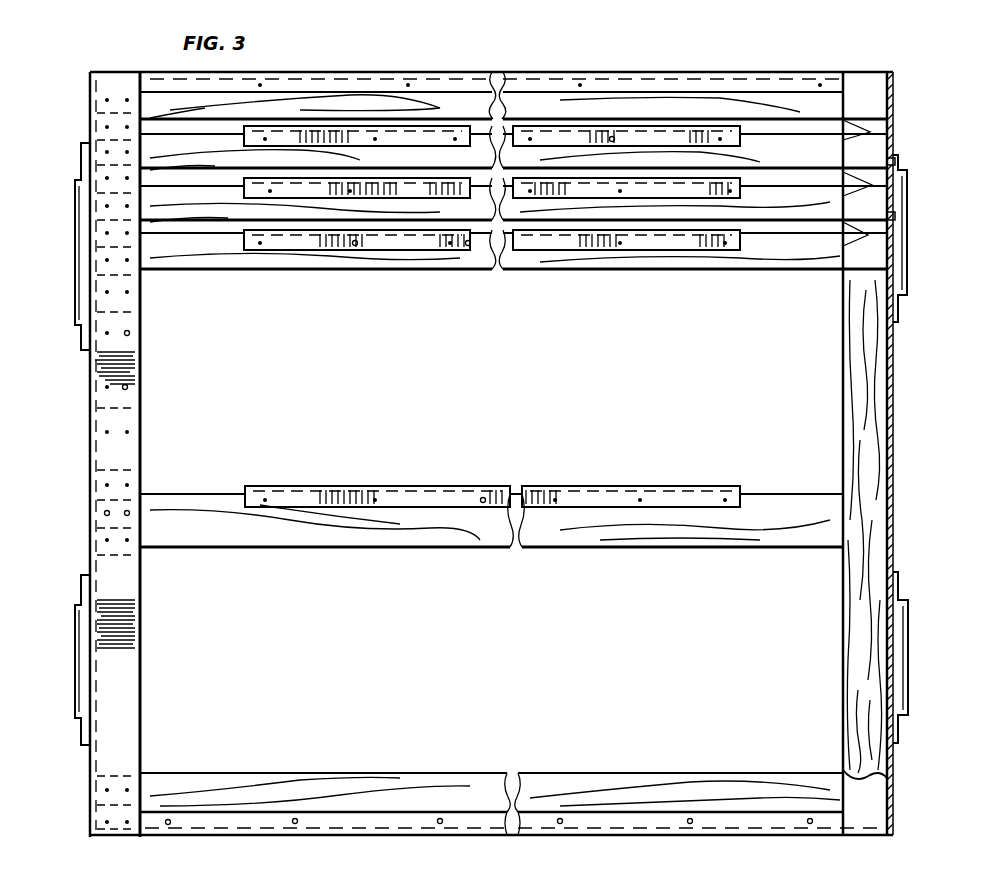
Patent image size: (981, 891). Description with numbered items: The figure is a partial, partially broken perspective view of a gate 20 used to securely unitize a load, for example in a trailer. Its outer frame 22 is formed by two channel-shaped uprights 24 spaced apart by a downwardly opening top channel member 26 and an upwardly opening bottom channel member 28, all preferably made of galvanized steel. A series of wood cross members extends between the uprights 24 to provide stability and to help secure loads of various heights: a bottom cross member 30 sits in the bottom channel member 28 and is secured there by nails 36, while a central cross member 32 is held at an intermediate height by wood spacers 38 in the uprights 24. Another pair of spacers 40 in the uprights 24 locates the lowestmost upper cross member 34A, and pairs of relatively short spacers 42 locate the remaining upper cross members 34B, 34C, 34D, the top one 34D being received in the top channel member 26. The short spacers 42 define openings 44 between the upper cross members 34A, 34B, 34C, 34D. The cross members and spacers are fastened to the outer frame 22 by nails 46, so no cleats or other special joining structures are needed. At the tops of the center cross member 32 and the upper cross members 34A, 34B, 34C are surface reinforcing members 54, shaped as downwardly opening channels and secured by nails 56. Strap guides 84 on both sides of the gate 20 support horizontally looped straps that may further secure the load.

The gate 20 is at (465, 52).
The outer frame 22 is at (143, 431).
The channel-shaped upright 24 is at (893, 418).
The top channel member 26 is at (530, 78).
The bottom channel member 28 is at (390, 826).
The bottom cross member 30 is at (418, 800).
The central cross member 32 is at (566, 537).
The upper cross member 34A is at (787, 263).
The upper cross member 34B is at (792, 211).
The upper cross member 34C is at (860, 155).
The upper cross member 34D is at (836, 111).
The nail 36 is at (295, 824).
The wood spacer 38 is at (881, 687).
The spacer 40 is at (884, 391).
The short spacer 42 is at (912, 130).
The opening 44 is at (190, 118).
The nail 46 is at (126, 384).
The surface reinforcing member 54 is at (420, 146).
The nail 56 is at (614, 136).
The strap guide 84 is at (75, 262).